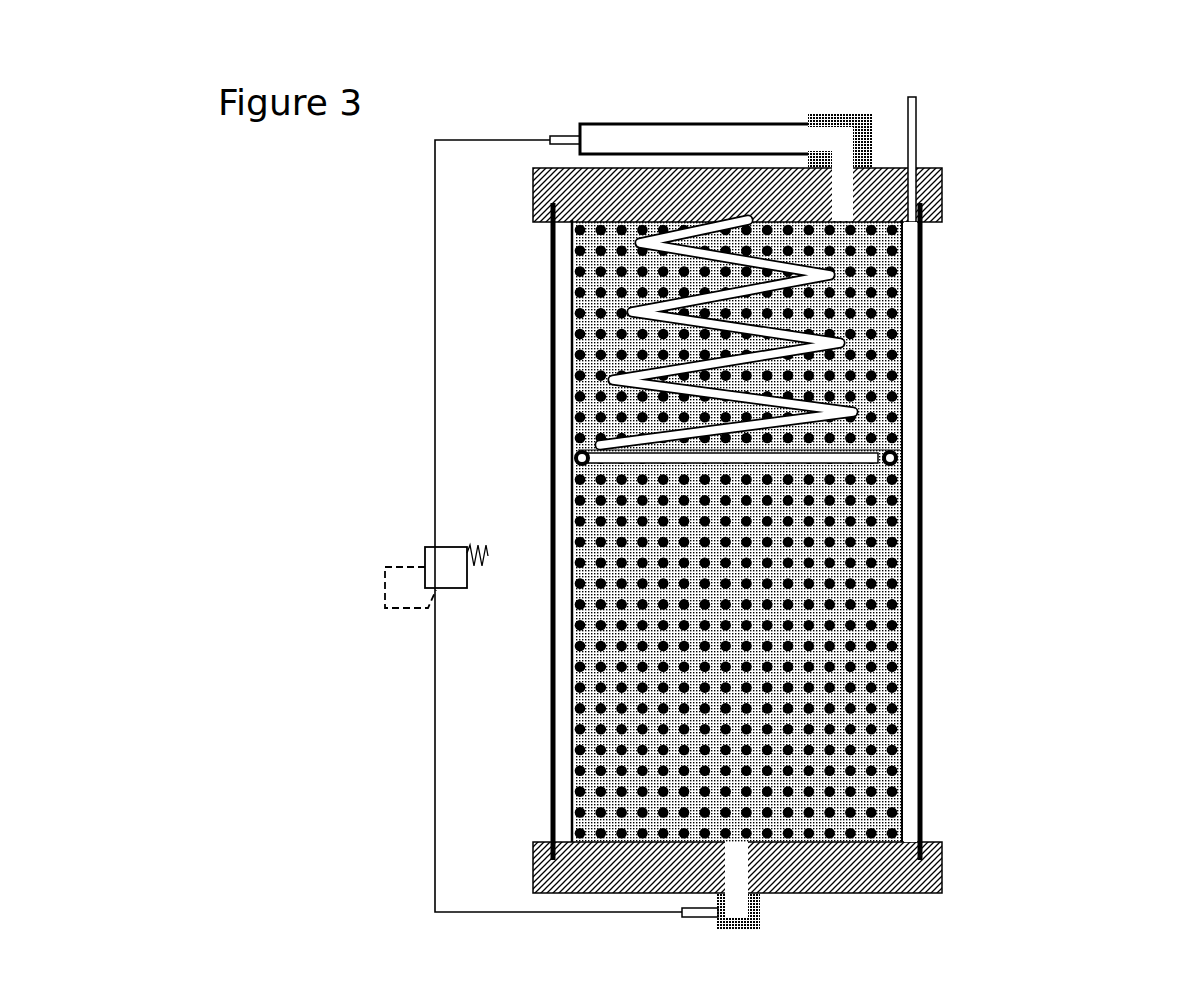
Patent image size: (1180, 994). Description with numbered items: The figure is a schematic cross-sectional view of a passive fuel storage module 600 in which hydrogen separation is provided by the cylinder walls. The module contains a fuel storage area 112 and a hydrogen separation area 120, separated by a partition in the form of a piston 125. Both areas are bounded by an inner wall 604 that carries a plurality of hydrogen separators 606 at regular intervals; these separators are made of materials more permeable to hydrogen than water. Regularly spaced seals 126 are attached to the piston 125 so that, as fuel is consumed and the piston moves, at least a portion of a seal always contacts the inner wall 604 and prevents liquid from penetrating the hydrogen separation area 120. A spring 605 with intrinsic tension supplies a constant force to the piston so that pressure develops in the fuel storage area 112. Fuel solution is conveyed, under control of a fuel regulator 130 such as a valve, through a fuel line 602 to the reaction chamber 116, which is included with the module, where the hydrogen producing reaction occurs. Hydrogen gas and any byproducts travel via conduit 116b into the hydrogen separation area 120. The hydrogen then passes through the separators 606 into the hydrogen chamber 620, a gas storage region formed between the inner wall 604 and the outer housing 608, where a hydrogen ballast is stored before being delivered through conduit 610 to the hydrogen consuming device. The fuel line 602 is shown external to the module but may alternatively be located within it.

The fuel storage module 600 is at (514, 85).
The fuel line 602 is at (435, 222).
The reaction chamber 116 is at (678, 138).
The conduit 116b is at (845, 181).
The conduit 610 is at (918, 107).
The hydrogen separation area 120 is at (664, 332).
The spring 605 is at (632, 310).
The piston 125 is at (827, 458).
The seals 126 is at (580, 447).
The fuel storage area 112 is at (866, 532).
The hydrogen separators 606 is at (860, 590).
The inner wall 604 is at (900, 553).
The outer housing 608 is at (922, 683).
The hydrogen chamber 620 is at (910, 767).
The fuel regulator 130 is at (373, 617).